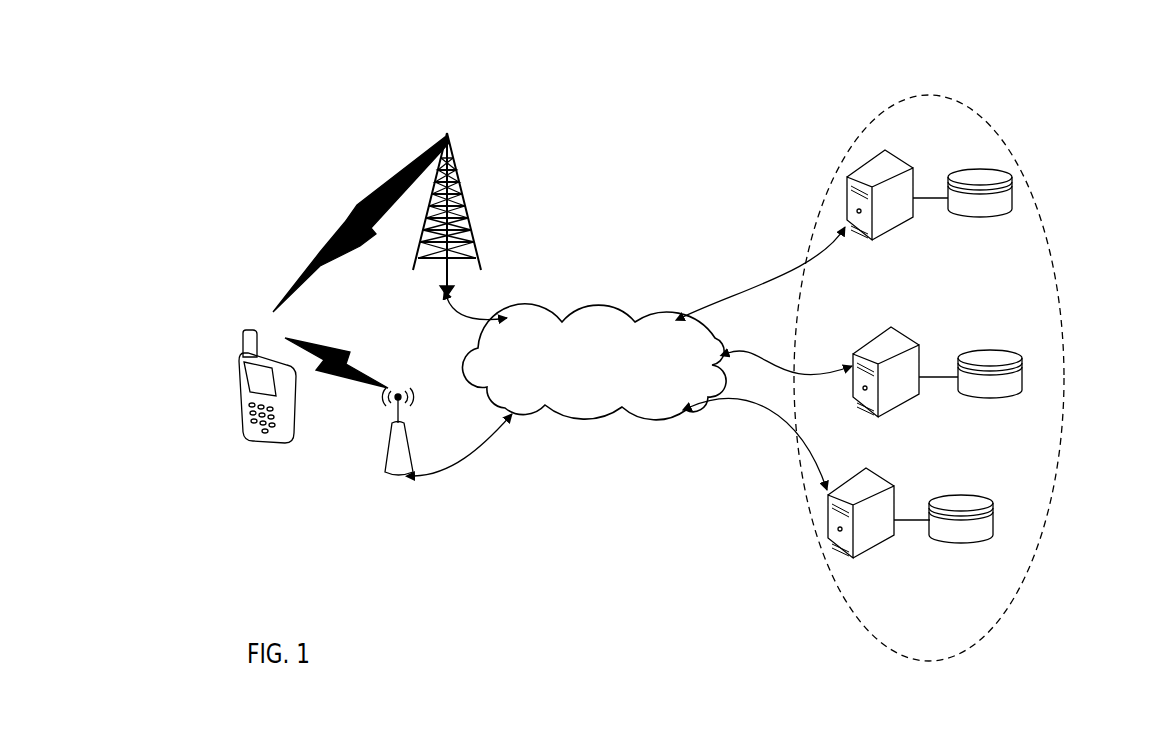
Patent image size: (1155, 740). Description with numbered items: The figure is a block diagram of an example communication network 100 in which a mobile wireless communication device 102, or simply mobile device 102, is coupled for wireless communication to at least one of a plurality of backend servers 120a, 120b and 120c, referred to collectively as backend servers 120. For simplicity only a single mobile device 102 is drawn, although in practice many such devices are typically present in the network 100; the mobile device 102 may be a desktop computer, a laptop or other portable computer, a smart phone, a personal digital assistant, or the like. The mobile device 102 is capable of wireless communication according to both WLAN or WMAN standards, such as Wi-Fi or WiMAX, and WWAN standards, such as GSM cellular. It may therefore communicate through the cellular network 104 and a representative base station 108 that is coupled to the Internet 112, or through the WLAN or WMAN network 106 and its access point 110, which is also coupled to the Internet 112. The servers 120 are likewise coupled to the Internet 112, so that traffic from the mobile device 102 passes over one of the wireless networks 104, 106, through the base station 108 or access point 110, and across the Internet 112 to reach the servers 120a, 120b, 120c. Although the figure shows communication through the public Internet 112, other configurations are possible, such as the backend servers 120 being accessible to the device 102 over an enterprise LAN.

The communication network 100 is at (642, 170).
The mobile wireless communication device 102 is at (272, 445).
The cellular network 104 is at (343, 217).
The WLAN or WMAN network 106 is at (361, 358).
The base station 108 is at (467, 213).
The access point 110 is at (387, 477).
The Internet 112 is at (596, 402).
The backend servers 120 is at (948, 81).
The backend server 120a is at (913, 218).
The backend server 120b is at (918, 345).
The backend server 120c is at (873, 485).